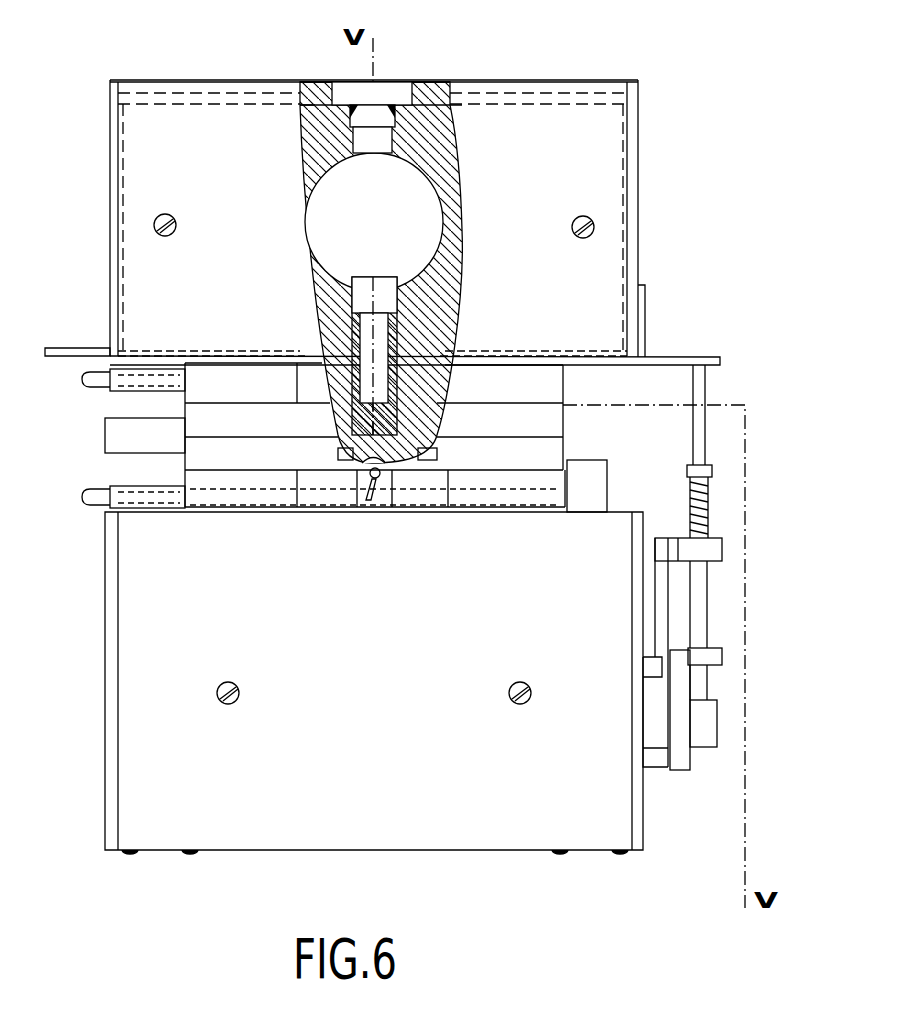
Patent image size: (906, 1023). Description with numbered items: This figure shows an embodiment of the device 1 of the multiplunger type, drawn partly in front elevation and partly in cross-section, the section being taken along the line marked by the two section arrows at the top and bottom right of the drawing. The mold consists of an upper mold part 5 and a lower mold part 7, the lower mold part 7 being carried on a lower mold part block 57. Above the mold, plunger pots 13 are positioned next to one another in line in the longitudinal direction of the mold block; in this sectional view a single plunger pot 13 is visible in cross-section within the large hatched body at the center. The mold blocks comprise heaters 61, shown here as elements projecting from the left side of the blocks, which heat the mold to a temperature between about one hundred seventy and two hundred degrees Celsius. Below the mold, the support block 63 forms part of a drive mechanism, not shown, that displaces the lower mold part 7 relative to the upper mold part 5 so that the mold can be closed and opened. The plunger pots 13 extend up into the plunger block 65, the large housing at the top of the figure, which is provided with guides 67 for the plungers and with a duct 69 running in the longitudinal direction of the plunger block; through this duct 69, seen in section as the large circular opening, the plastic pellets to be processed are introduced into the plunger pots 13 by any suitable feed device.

The device 1 is at (686, 100).
The upper mold part 5 is at (567, 408).
The lower mold part 7 is at (567, 452).
The plunger pot 13 is at (397, 268).
The lower mold part block 57 is at (185, 477).
The heater 61 is at (84, 378).
The support block 63 is at (140, 776).
The plunger block 65 is at (633, 207).
The guide 67 is at (398, 100).
The duct 69 is at (316, 205).